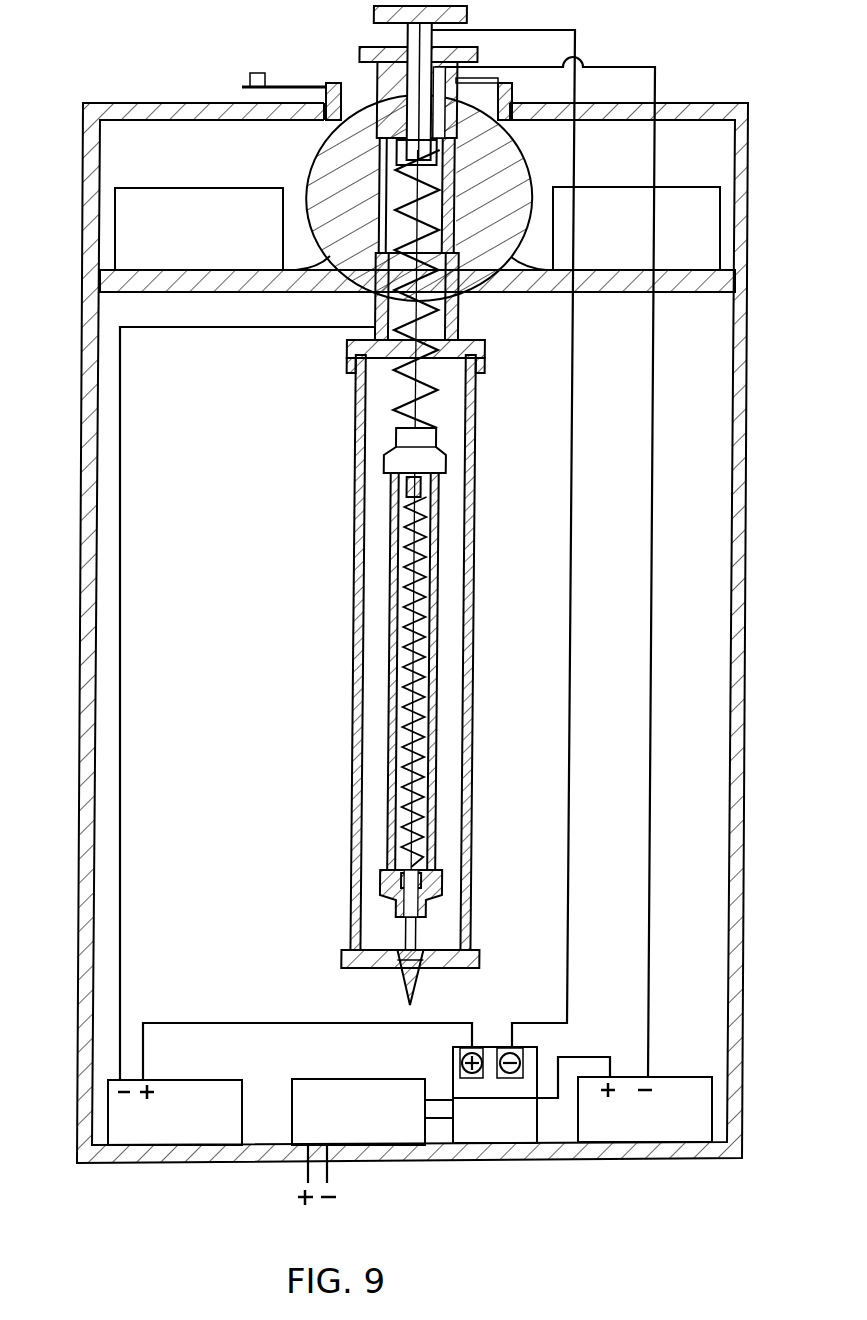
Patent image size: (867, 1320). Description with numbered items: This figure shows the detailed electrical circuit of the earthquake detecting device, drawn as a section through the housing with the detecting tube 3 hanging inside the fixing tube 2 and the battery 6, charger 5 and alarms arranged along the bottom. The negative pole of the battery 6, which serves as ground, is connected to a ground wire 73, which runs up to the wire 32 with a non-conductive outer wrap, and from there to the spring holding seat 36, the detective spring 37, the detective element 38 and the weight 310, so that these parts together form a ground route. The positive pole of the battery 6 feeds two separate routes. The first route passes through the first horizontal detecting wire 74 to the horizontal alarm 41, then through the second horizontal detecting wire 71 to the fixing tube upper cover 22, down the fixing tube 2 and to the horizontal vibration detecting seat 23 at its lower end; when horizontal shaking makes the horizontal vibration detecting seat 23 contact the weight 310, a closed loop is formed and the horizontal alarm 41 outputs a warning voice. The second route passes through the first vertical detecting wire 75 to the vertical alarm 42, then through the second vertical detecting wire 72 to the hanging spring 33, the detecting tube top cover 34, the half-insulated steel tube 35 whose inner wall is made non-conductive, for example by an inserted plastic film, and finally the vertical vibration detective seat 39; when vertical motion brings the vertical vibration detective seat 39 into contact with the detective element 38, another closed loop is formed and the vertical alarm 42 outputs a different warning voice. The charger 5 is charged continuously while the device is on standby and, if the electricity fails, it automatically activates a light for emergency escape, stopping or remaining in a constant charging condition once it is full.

The fixing tube 2 is at (357, 635).
The detecting tube 3 is at (401, 716).
The fixing tube upper cover 22 is at (347, 356).
The horizontal vibration detecting seat 23 is at (345, 962).
The wire with a non-conductive outer wrap 32 is at (405, 368).
The hanging spring 33 is at (403, 392).
The detecting tube top cover 34 is at (415, 450).
The half-insulated steel tube 35 is at (413, 671).
The spring holding seat 36 is at (414, 487).
The detective spring 37 is at (413, 682).
The detective element 38 is at (410, 911).
The vertical vibration detective seat 39 is at (411, 893).
The weight 310 is at (410, 977).
The horizontal alarm 41 is at (170, 1080).
The vertical alarm 42 is at (662, 1076).
The charger 5 is at (316, 1079).
The battery 6 is at (453, 1063).
The second horizontal detecting wire 71 is at (123, 702).
The second vertical detecting wire 72 is at (651, 702).
The ground wire 73 is at (571, 702).
The first horizontal detecting wire 74 is at (222, 1022).
The first vertical detecting wire 75 is at (590, 1056).